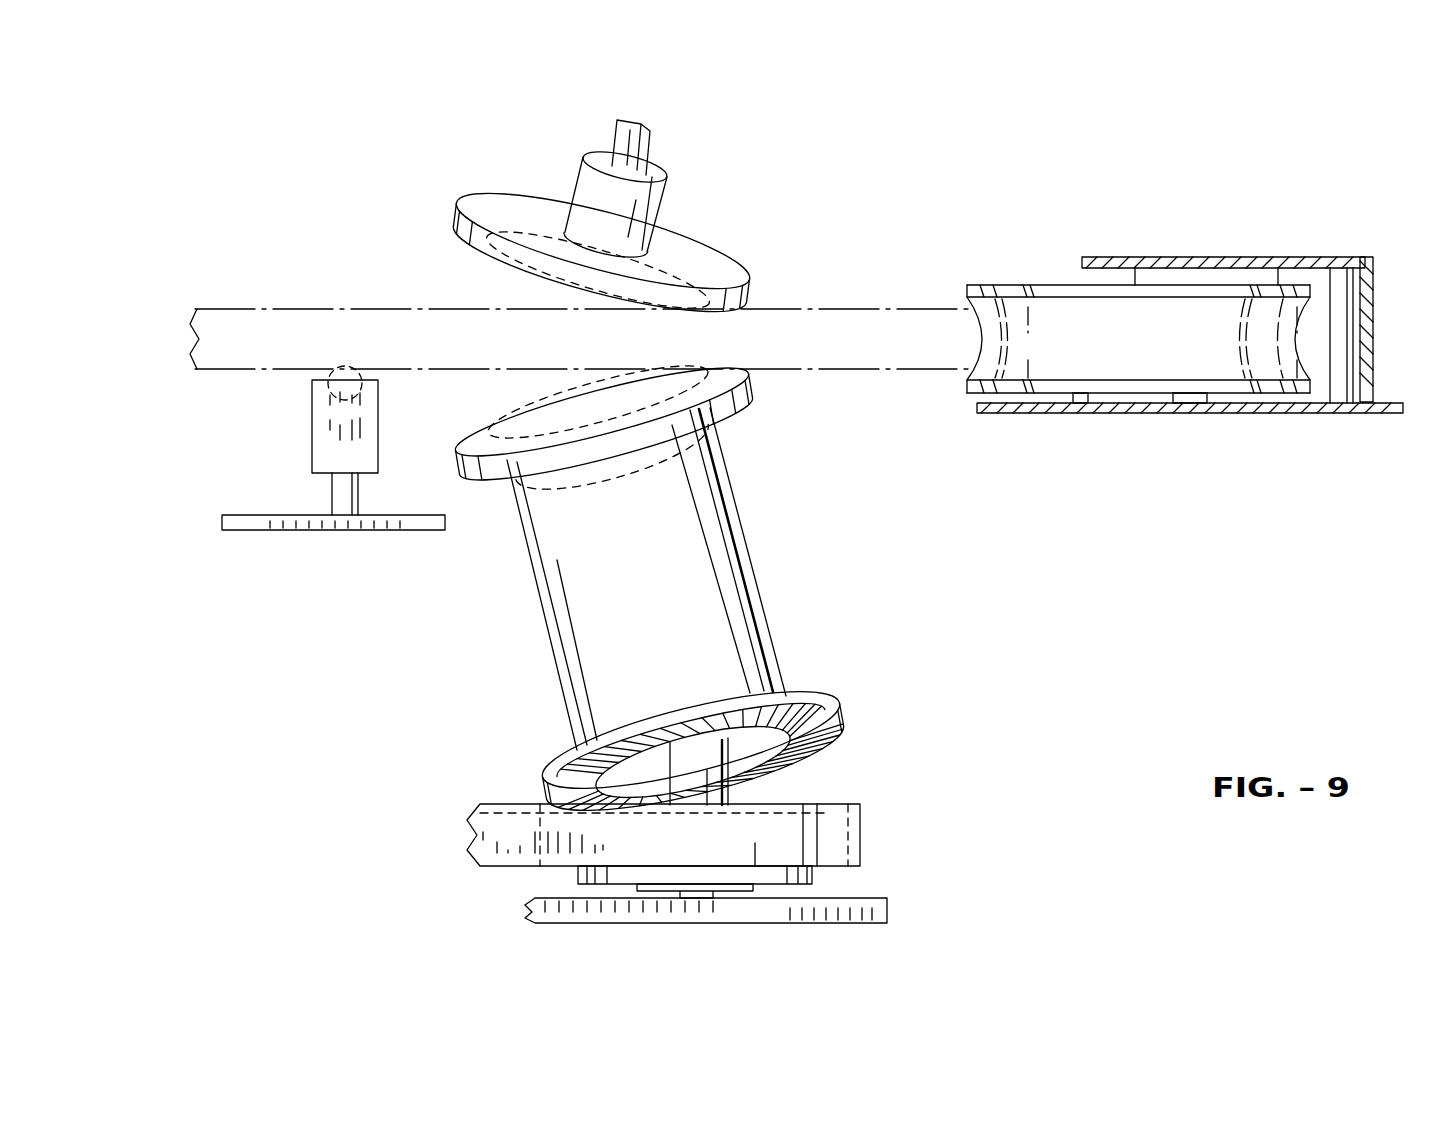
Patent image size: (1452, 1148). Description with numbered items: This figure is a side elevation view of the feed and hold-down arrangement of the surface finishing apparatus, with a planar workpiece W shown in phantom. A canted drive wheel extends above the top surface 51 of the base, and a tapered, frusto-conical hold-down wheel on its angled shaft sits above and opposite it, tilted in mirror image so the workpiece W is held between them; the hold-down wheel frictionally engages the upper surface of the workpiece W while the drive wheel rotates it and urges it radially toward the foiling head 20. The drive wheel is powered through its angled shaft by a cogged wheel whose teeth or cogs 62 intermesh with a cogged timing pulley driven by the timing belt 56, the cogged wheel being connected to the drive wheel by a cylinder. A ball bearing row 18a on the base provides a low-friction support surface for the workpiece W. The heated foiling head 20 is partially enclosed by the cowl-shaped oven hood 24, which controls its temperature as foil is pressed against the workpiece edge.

The workpiece W is at (282, 333).
The teeth or cogs 62 is at (828, 737).
The timing belt 56 is at (508, 815).
The foiling head or wheel 20 is at (988, 288).
The heater or oven hood 24 is at (1337, 262).
The ball bearing row 18a is at (323, 397).
The top surface of base 51 is at (276, 528).